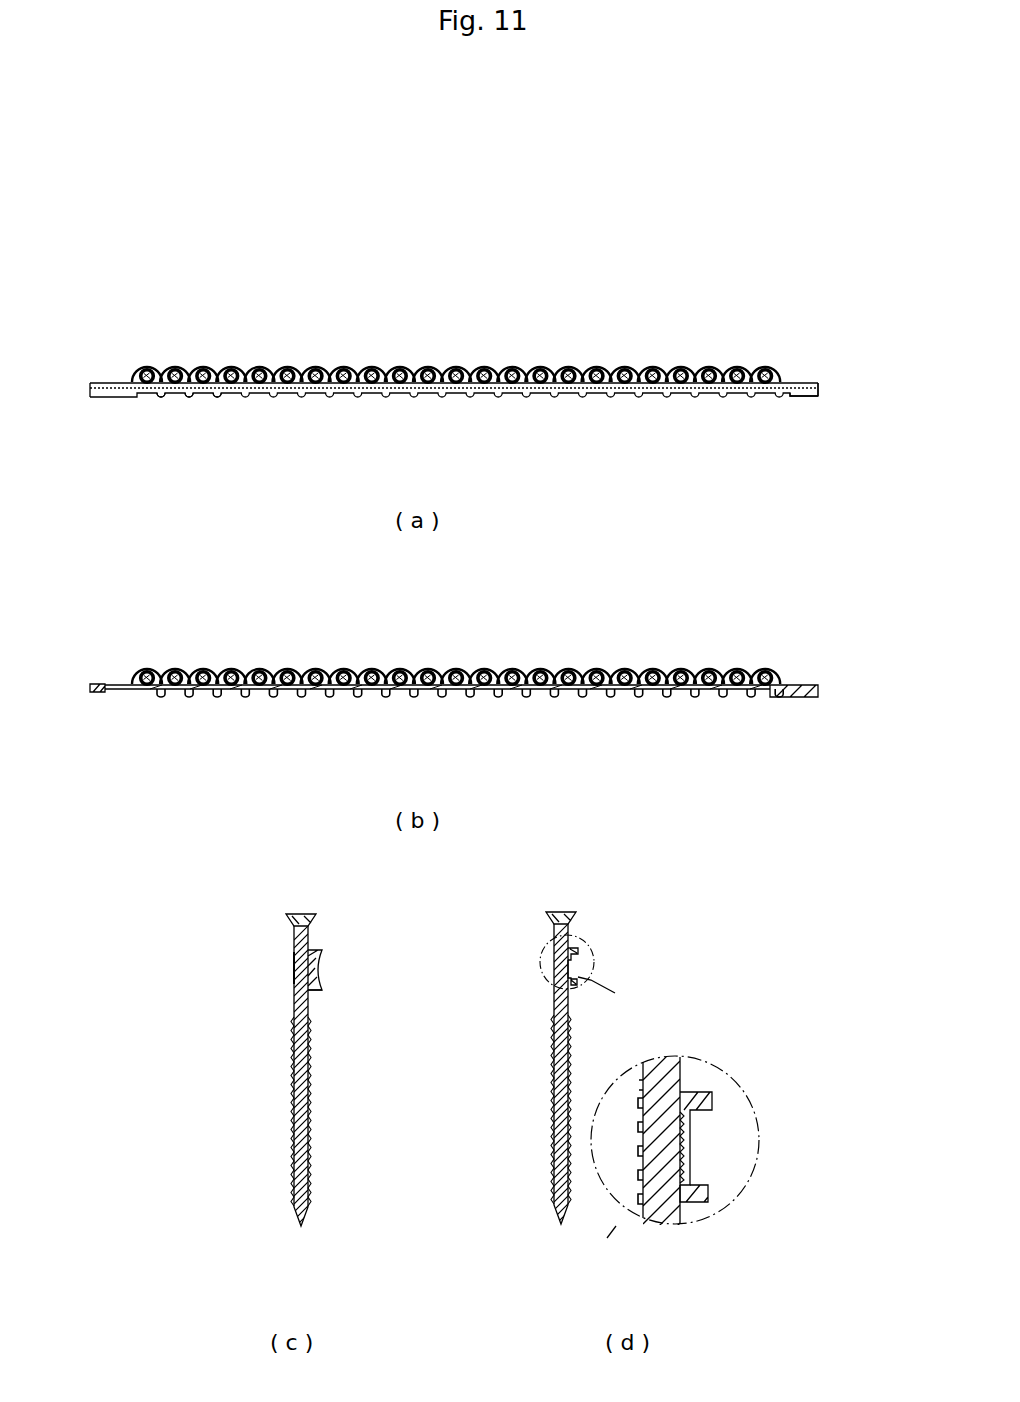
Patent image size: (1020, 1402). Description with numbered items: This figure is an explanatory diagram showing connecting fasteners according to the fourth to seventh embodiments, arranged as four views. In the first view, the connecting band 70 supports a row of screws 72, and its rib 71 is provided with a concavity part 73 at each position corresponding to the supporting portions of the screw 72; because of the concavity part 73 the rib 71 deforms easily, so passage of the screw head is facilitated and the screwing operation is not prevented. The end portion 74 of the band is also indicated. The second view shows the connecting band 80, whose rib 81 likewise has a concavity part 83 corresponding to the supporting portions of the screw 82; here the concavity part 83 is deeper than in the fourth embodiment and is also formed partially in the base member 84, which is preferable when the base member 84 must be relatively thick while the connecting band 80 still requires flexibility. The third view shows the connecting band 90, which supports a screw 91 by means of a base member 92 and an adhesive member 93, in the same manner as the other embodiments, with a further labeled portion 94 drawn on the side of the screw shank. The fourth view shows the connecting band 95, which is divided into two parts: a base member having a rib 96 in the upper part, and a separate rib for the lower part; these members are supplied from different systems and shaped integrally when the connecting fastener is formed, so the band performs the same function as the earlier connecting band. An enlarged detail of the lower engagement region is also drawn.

The connecting band 70 is at (690, 344).
The rib 71 is at (112, 399).
The screw 72 is at (228, 382).
The concavity part 73 is at (198, 396).
The end portion of strip 74 is at (793, 398).
The connecting band 80 is at (690, 646).
The rib 81 is at (97, 700).
The screw 82 is at (228, 684).
The concavity part 83 is at (198, 698).
The base member 84 is at (790, 700).
The connecting band 90 is at (343, 968).
The screw 91 is at (307, 1098).
The base member 92 is at (312, 991).
The adhesive member 93 is at (294, 978).
The engaging piece 94 is at (318, 968).
The connecting band 95 is at (622, 952).
The rib 96 is at (575, 950).